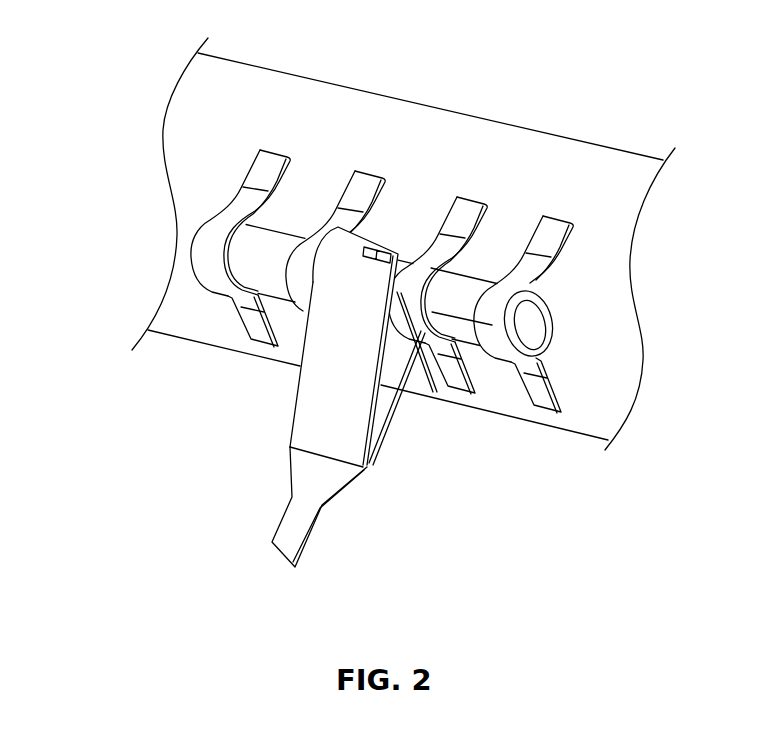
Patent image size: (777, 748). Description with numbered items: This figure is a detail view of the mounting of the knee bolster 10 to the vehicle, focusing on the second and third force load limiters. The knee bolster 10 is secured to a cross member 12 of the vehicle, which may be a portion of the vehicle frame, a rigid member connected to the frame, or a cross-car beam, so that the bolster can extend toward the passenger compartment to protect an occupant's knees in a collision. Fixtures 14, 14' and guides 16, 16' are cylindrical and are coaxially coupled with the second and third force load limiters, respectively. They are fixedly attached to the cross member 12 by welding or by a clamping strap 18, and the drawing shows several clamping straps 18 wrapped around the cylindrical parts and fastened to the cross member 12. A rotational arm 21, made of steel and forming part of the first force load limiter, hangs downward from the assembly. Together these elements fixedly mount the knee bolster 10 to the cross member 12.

The knee bolster 10 is at (144, 61).
The cross member 12 is at (596, 160).
The fixture 14 is at (346, 327).
The fixture 14' is at (604, 323).
The guide 16 is at (335, 296).
The guide 16' is at (440, 399).
The clamping strap 18 is at (268, 163).
The rotational arm 21 is at (295, 522).